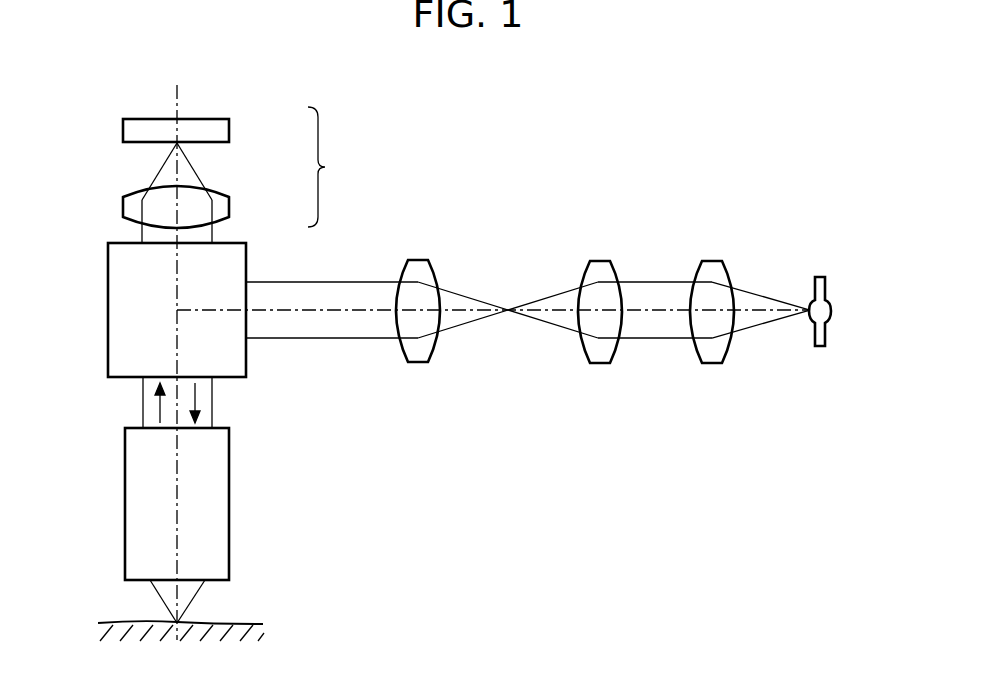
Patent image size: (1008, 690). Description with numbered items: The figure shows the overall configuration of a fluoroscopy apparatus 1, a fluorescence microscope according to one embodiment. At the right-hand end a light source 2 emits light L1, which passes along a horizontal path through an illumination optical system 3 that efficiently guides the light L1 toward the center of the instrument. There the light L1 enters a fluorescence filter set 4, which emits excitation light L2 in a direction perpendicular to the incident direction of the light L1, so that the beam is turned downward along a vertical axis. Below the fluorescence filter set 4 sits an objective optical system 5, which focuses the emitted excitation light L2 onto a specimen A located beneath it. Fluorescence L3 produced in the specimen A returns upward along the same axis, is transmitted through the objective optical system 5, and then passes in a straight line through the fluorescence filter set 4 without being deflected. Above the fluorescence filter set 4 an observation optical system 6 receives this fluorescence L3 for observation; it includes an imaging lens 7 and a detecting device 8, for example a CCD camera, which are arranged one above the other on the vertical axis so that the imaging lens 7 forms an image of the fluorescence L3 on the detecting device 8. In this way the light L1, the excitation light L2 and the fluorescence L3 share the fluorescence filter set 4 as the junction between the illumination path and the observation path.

The fluoroscopy apparatus 1 is at (683, 143).
The light source 2 is at (825, 287).
The illumination optical system 3 is at (395, 382).
The fluorescence filter set 4 is at (246, 258).
The objective optical system 5 is at (229, 507).
The observation optical system 6 is at (327, 167).
The imaging lens 7 is at (229, 207).
The detecting device 8 is at (229, 130).
The light L1 is at (380, 283).
The excitation light L2 is at (202, 398).
The fluorescence L3 is at (143, 232).
The specimen A is at (250, 630).